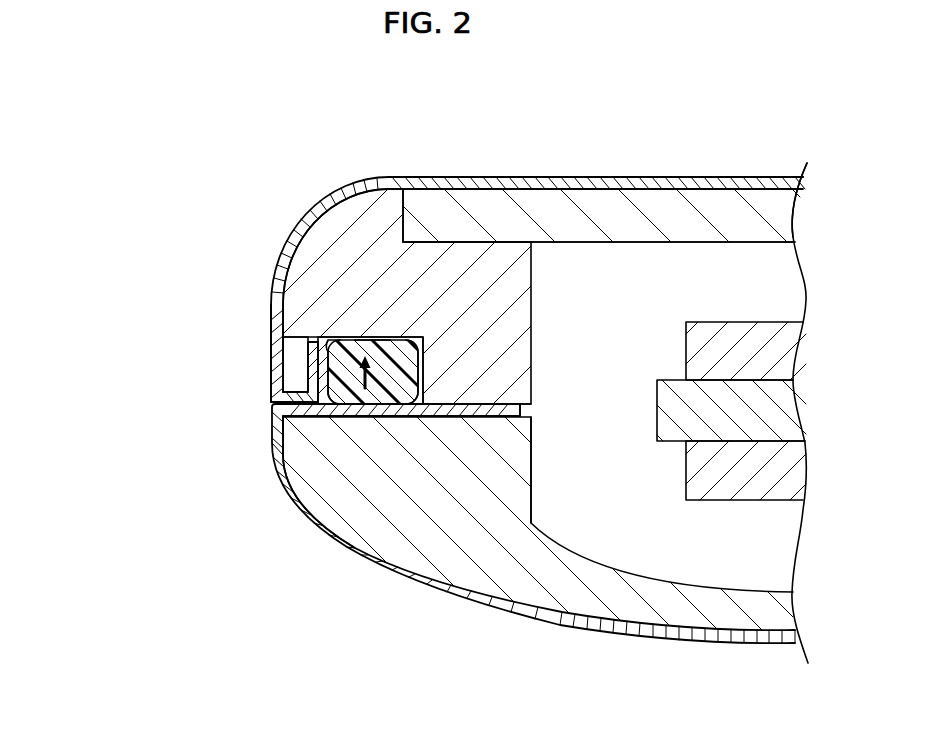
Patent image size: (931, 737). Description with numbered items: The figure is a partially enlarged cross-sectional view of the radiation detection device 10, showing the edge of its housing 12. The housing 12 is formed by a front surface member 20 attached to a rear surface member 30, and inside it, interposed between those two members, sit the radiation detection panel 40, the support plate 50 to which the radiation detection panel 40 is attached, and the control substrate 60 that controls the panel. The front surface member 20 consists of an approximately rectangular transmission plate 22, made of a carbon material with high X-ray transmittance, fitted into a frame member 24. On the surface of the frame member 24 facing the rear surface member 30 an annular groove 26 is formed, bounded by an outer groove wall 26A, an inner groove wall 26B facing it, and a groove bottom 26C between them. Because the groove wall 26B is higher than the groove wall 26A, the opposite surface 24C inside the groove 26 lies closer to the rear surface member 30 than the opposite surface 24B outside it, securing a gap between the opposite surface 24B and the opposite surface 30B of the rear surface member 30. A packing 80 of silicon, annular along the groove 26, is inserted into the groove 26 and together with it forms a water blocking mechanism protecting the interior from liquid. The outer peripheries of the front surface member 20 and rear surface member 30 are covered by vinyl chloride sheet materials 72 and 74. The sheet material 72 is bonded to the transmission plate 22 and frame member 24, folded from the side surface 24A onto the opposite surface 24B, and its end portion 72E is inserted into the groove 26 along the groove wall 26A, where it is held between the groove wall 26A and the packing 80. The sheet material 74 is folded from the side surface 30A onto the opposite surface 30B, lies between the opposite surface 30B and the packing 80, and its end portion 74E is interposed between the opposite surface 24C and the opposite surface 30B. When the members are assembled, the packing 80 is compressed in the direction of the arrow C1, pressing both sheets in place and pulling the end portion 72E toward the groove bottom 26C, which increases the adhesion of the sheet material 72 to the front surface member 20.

The radiation detection device 10 is at (108, 433).
The housing 12 is at (273, 190).
The front surface member 20 is at (510, 100).
The transmission plate 22 is at (497, 189).
The frame member 24 is at (390, 187).
The side surface of the frame member 24A is at (273, 360).
The opposite surface of the frame member outside the groove 24B is at (273, 440).
The opposite surface of the frame member inside the groove 24C is at (468, 417).
The groove 26 is at (508, 262).
The outer groove wall 26A is at (345, 352).
The inner groove wall 26B is at (415, 355).
The groove bottom 26C is at (378, 350).
The rear surface member 30 is at (672, 643).
The side surface of the rear surface member 30A is at (272, 482).
The opposite surface of the rear surface member 30B is at (508, 392).
The radiation detection panel 40 is at (768, 322).
The support plate 50 is at (768, 443).
The control substrate 60 is at (768, 500).
The sheet material 72 is at (660, 177).
The end portion of the sheet material 72 72E is at (300, 312).
The sheet material 74 is at (368, 572).
The end portion of the sheet material 74 74E is at (533, 413).
The packing 80 is at (385, 412).
The direction of compression C1 is at (330, 410).